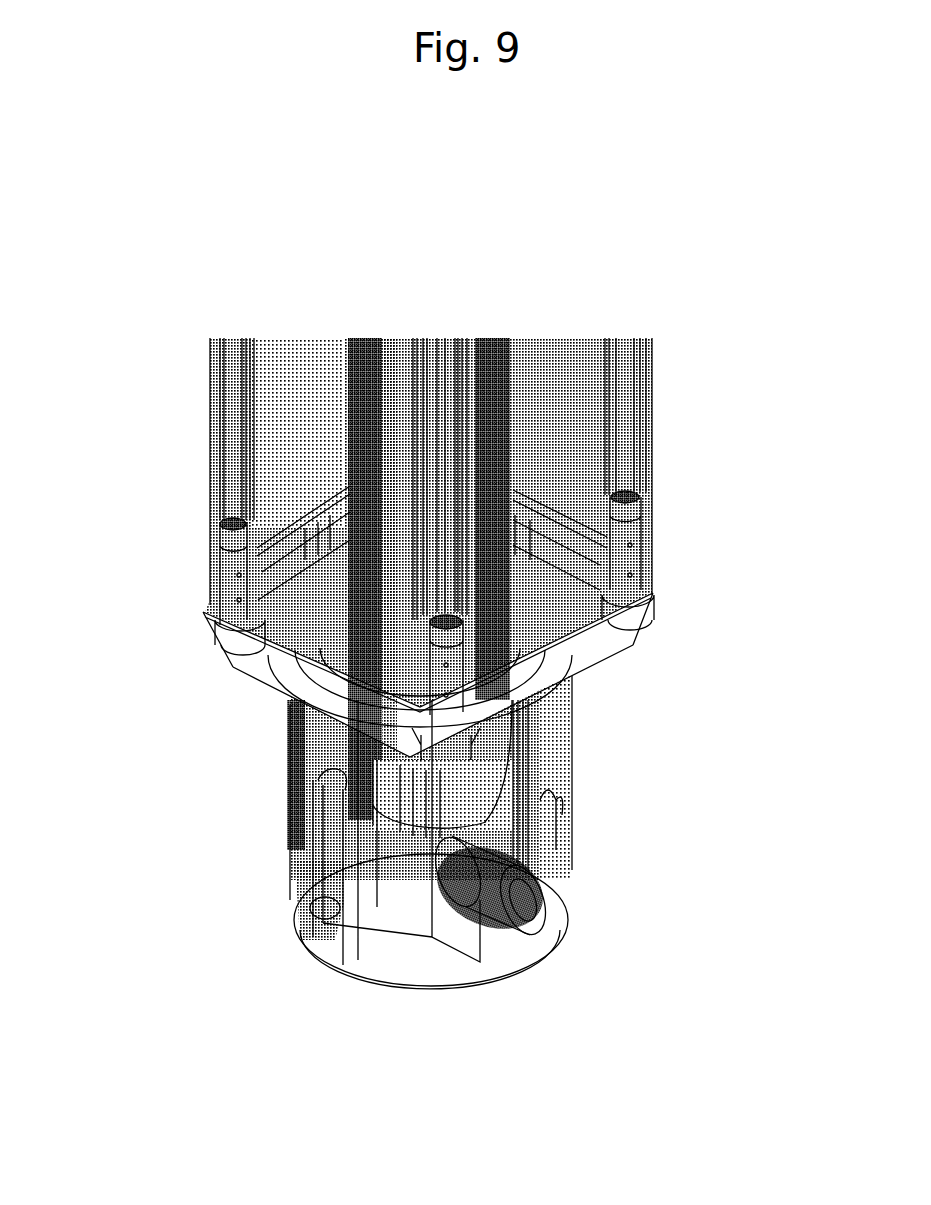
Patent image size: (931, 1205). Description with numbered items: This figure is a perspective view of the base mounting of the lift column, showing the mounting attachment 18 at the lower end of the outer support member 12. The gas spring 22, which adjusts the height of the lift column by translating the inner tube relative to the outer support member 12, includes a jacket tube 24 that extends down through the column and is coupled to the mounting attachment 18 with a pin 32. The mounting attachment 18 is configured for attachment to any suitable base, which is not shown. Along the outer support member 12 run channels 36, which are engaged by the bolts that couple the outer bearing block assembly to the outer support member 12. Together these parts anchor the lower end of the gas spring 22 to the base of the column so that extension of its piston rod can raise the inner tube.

The outer support member 12 is at (570, 423).
The mounting attachment 18 is at (570, 842).
The gas spring 22 is at (508, 365).
The jacket tube 24 is at (372, 592).
The pin 32 is at (540, 913).
The channels 36 is at (227, 424).